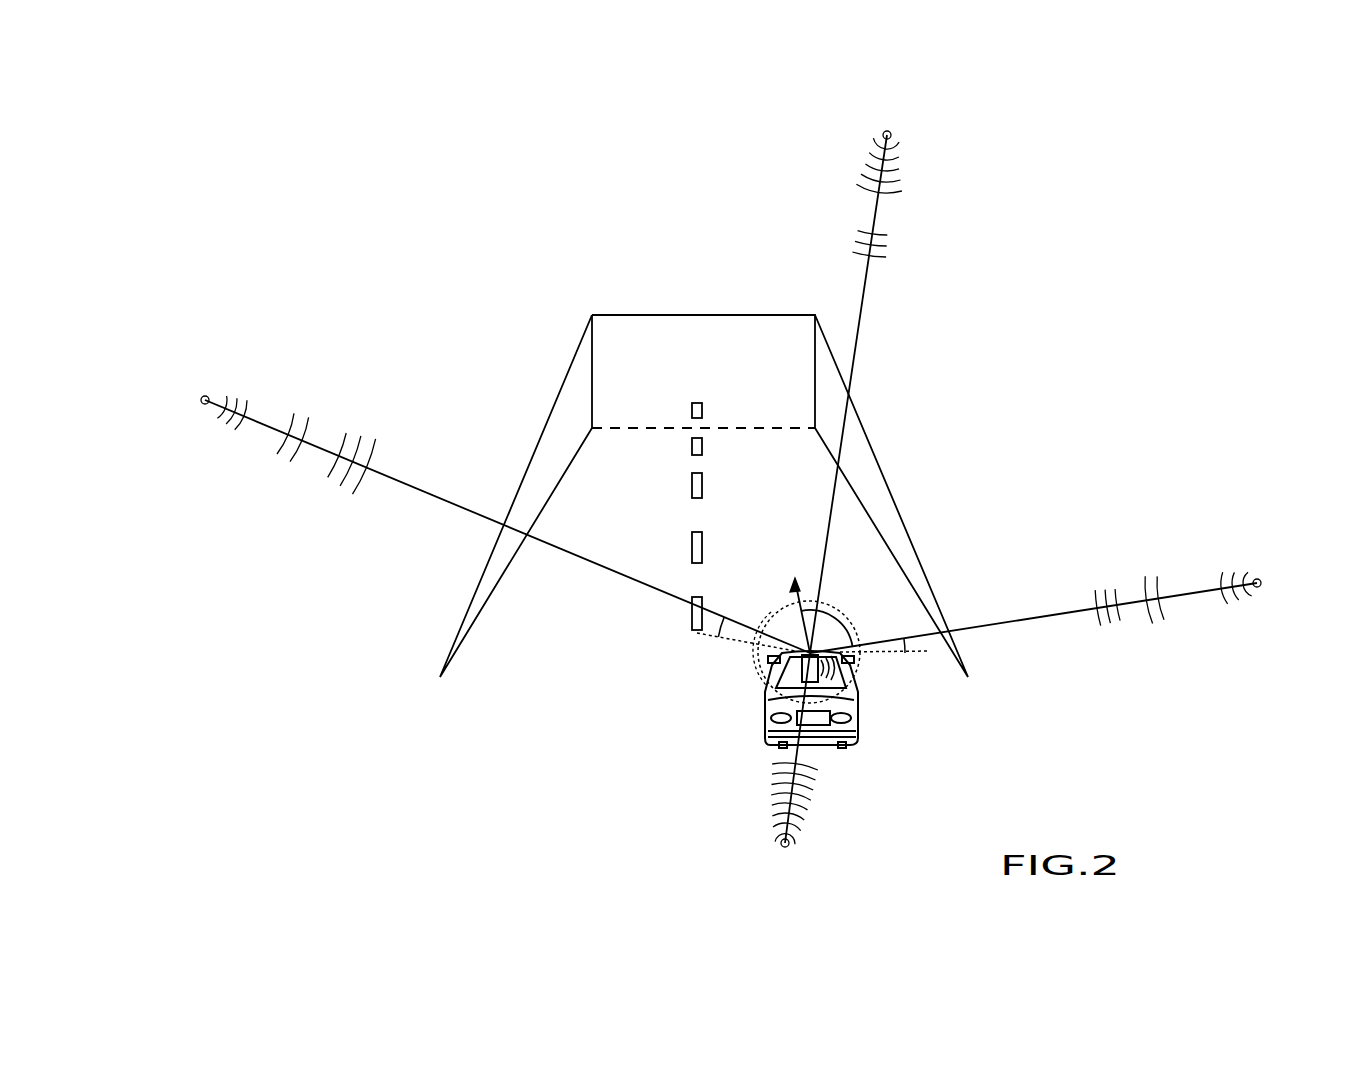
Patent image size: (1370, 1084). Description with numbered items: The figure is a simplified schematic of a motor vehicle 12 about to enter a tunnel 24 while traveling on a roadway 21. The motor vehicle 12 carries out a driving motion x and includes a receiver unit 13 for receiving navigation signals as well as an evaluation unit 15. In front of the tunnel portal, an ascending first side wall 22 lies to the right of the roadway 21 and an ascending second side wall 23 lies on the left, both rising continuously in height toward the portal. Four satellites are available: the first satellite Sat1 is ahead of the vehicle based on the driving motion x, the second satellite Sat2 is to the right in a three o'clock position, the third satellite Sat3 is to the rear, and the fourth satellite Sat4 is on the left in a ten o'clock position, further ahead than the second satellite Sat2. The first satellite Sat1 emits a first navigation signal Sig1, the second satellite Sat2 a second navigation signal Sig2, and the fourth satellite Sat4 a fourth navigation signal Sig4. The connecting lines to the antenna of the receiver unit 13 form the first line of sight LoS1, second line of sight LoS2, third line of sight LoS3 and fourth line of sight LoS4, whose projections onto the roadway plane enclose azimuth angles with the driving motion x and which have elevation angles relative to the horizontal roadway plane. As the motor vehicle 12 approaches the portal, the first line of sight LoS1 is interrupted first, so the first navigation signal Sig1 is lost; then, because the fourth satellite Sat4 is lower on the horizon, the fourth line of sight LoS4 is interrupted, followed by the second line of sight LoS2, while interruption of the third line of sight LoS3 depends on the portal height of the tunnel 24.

The motor vehicle 12 is at (845, 743).
The receiver unit 13 is at (826, 665).
The evaluation unit 15 is at (850, 697).
The roadway 21 is at (727, 516).
The first side wall 22 is at (878, 487).
The second side wall 23 is at (497, 568).
The tunnel 24 is at (703, 371).
The first satellite Sat1 is at (891, 133).
The second satellite Sat2 is at (1259, 578).
The third satellite Sat3 is at (790, 843).
The fourth satellite Sat4 is at (208, 396).
The first line of sight LoS1 is at (863, 287).
The second line of sight LoS2 is at (1045, 620).
The third line of sight LoS3 is at (797, 752).
The fourth line of sight LoS4 is at (390, 493).
The first navigation signal Sig1 is at (868, 237).
The second navigation signal Sig2 is at (1118, 613).
The fourth navigation signal Sig4 is at (373, 445).
The driving motion x is at (790, 588).